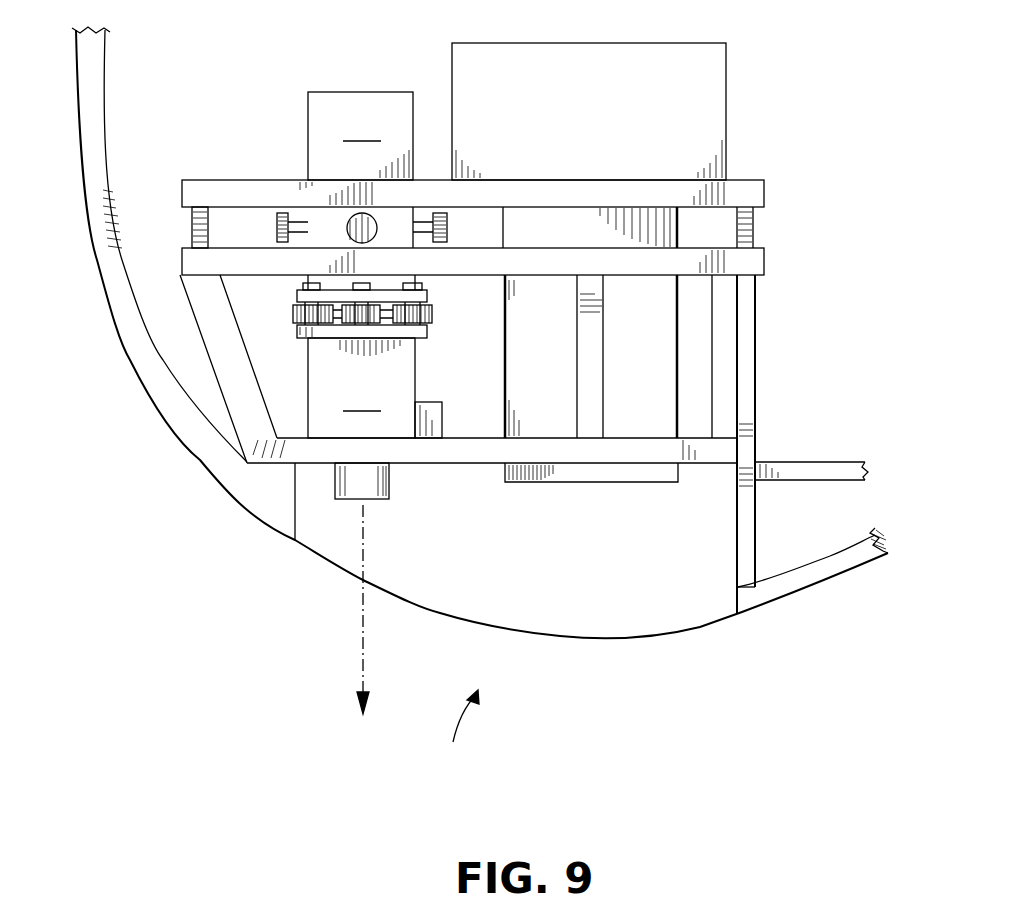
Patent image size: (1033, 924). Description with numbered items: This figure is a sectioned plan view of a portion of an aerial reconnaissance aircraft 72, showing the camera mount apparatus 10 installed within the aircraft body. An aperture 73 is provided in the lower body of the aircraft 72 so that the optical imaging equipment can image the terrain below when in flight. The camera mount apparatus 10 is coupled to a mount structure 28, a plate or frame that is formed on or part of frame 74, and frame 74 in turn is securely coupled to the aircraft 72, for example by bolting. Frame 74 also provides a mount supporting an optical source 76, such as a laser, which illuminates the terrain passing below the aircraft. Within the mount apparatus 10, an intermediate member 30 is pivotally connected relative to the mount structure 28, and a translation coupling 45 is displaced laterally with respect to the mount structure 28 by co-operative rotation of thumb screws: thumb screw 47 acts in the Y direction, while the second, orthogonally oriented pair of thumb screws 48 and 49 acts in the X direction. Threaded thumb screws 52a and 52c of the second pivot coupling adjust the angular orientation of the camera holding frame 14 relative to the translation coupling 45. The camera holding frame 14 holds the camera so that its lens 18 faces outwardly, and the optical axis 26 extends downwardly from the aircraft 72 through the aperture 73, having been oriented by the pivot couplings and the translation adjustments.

The camera mount apparatus 10 is at (275, 100).
The camera holding frame 14 is at (375, 388).
The camera lens 18 is at (390, 483).
The optical image axis 26 is at (360, 620).
The mount structure 28 is at (218, 182).
The intermediate member 30 is at (360, 136).
The translation coupling 45 is at (427, 294).
The thumb screw 47 is at (350, 222).
The thumb screw 48 is at (285, 212).
The thumb screw 49 is at (427, 222).
The threaded thumb screw 52a is at (293, 313).
The threaded thumb screw 52c is at (432, 313).
The aircraft 72 is at (97, 270).
The aperture 73 is at (431, 747).
The frame 74 is at (710, 465).
The optical source 76 is at (603, 483).